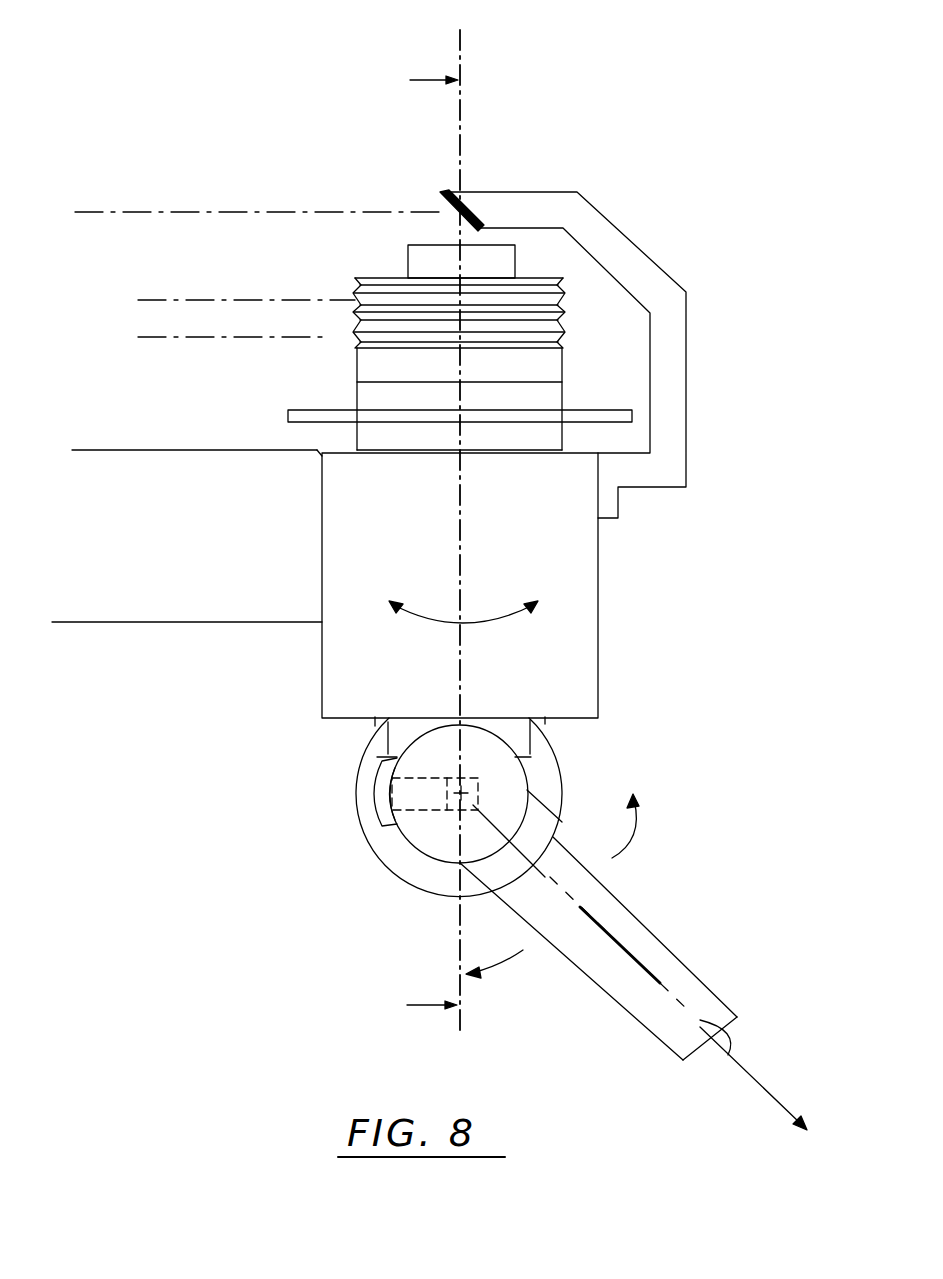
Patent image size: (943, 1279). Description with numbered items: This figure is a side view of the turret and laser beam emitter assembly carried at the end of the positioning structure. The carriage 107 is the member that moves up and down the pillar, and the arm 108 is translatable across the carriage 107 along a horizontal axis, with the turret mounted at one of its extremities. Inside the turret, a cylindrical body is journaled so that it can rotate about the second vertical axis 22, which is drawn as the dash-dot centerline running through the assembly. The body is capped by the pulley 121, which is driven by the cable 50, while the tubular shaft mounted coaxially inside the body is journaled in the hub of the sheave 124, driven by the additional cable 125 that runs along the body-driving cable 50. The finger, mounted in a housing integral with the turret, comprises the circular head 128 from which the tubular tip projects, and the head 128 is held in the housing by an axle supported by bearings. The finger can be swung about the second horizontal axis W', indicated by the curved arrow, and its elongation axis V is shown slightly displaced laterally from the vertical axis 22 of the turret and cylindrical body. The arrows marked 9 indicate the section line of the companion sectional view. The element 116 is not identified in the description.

The second vertical axis Z2,Z2' 22 is at (483, 524).
The section line for FIG. 9 is at (432, 549).
The locking wedge 116 is at (441, 170).
The additional cable 125 is at (322, 276).
The cable 50 is at (277, 336).
The sheave 124 is at (560, 275).
The pulley 121 is at (563, 338).
The carriage 107 is at (322, 686).
The arm 108 is at (183, 610).
The circular head 128 is at (427, 837).
The elongation axis of the finger V is at (638, 956).
The second horizontal axis W W' is at (555, 867).